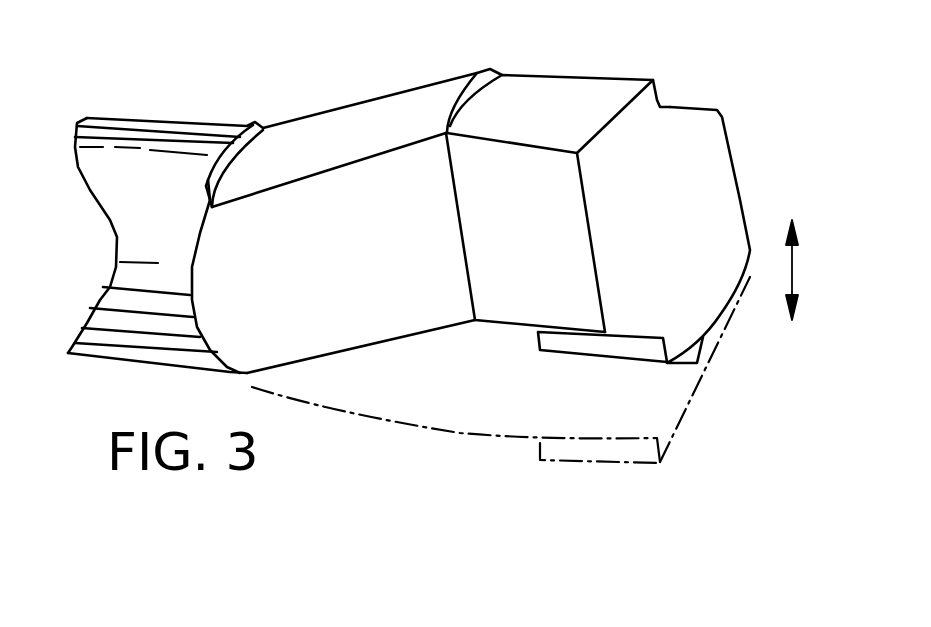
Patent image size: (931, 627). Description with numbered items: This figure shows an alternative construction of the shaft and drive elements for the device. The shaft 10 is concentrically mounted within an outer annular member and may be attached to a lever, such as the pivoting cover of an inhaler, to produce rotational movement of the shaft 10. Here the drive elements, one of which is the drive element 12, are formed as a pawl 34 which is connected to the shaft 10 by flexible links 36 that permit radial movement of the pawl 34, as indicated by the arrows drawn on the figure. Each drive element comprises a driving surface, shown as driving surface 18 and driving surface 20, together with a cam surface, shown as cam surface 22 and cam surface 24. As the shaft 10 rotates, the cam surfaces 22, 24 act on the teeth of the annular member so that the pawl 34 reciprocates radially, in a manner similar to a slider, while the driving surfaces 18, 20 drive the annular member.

The shaft 10 is at (177, 137).
The flexible link 36 is at (322, 140).
The cam surface 22 is at (597, 82).
The driving surface 18 is at (652, 100).
The drive element 12 is at (652, 100).
The pawl 34 is at (688, 216).
The cam surface 24 is at (703, 337).
The driving surface 20 is at (630, 350).